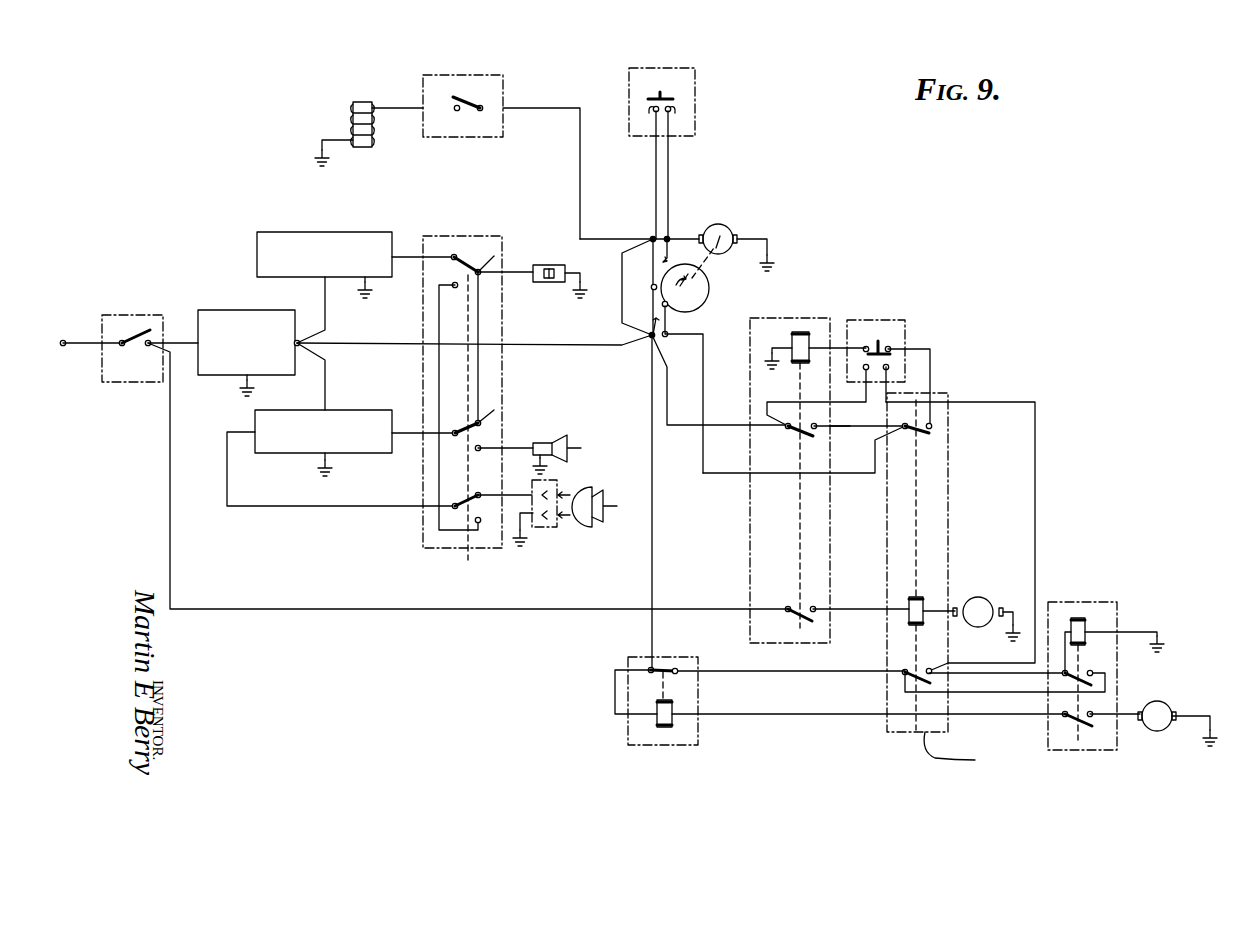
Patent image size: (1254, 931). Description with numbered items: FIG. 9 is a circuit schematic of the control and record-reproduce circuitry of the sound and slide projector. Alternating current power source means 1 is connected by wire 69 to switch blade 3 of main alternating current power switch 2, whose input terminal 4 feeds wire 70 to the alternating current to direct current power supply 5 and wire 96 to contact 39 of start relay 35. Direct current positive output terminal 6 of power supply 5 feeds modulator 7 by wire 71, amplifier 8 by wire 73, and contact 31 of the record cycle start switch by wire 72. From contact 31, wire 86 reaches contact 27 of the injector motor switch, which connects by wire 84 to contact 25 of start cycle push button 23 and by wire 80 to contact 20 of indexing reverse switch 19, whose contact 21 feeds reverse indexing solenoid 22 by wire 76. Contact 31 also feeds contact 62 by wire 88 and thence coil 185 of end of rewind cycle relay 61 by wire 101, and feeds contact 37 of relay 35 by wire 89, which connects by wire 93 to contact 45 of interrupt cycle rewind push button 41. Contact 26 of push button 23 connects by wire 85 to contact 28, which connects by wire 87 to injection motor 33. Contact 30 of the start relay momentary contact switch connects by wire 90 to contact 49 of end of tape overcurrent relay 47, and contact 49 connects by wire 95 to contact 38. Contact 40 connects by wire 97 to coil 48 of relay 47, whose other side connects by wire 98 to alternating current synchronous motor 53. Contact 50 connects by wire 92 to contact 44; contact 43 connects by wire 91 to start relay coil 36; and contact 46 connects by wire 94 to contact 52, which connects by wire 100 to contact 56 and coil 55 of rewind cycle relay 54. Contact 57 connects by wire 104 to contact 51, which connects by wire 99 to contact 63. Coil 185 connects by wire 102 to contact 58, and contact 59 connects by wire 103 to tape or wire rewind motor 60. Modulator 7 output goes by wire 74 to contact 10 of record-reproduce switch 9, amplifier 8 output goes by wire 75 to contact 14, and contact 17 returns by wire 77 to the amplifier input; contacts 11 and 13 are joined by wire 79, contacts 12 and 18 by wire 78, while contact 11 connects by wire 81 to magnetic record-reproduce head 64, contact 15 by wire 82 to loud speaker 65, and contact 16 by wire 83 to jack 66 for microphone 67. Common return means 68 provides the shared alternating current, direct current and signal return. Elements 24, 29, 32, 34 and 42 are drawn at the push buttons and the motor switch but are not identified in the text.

The alternating current power source means 1 is at (56, 352).
The main alternating current power switch 2 is at (128, 310).
The main alternating current power switch blade 3 is at (122, 348).
The alternating current power input means terminal 4 is at (147, 344).
The alternating current to direct current power supply 5 is at (224, 310).
The direct current positive power output terminal 6 is at (298, 334).
The modulator 7 is at (310, 232).
The amplifier 8 is at (286, 458).
The record-reproduce switch 9 is at (462, 230).
The contact 10 is at (451, 256).
The contact 11 is at (474, 256).
The contact 12 is at (454, 288).
The contact 13 is at (476, 414).
The contact 14 is at (460, 426).
The contact 15 is at (478, 450).
The contact 16 is at (479, 494).
The contact 17 is at (460, 500).
The contact 18 is at (483, 521).
The indexing reverse switch 19 is at (506, 88).
The contact 20 is at (479, 110).
The contact 21 is at (455, 112).
The reverse indexing solenoid 22 is at (362, 90).
The start cycle push button 23 is at (698, 88).
The push button 24 is at (658, 94).
The contact 25 is at (646, 120).
The contact 26 is at (678, 120).
The contact 27 is at (652, 236).
The contact 28 is at (668, 238).
The cam follower pivot 29 is at (650, 284).
The contact 30 is at (664, 342).
The contact 31 is at (648, 350).
The cam switch contact 32 is at (672, 308).
The injection motor 33 is at (734, 229).
The cam 34 is at (706, 281).
The start relay 35 is at (817, 312).
The start relay coil 36 is at (791, 333).
The contact 37 is at (786, 433).
The contact 38 is at (818, 422).
The contact 39 is at (789, 606).
The contact 40 is at (824, 610).
The interrupt cycle rewind push button 41 is at (864, 290).
The push button 42 is at (892, 341).
The contact 43 is at (868, 346).
The contact 44 is at (896, 349).
The contact 45 is at (864, 380).
The contact 46 is at (894, 368).
The end of tape overcurrent relay 47 is at (952, 529).
The coil 48 is at (914, 597).
The contact 49 is at (904, 434).
The contact 50 is at (940, 434).
The contact 51 is at (904, 669).
The contact 52 is at (928, 670).
The alternating current synchronous motor 53 is at (980, 627).
The rewind cycle relay 54 is at (1116, 609).
The coil 55 is at (1085, 626).
The contact 56 is at (1058, 685).
The contact 57 is at (1090, 672).
The contact 58 is at (1065, 717).
The contact 59 is at (1088, 712).
The tape or wire rewind motor 60 is at (1176, 701).
The end of rewind cycle relay 61 is at (660, 658).
The contact 62 is at (648, 672).
The contact 63 is at (683, 660).
The magnetic record-reproduce head 64 is at (564, 265).
The loud speaker 65 is at (579, 449).
The microphone jack 66 is at (556, 480).
The microphone 67 is at (608, 497).
The common return means 68 is at (315, 146).
The wire 69 is at (88, 334).
The wire 70 is at (164, 340).
The wire 71 is at (325, 326).
The wire 72 is at (353, 345).
The wire 73 is at (328, 382).
The wire 74 is at (410, 234).
The wire 75 is at (418, 452).
The wire 76 is at (403, 102).
The wire 77 is at (296, 506).
The wire 78 is at (439, 388).
The wire 79 is at (480, 373).
The wire 80 is at (553, 108).
The wire 81 is at (506, 264).
The wire 82 is at (504, 446).
The wire 83 is at (502, 493).
The wire 84 is at (650, 164).
The wire 85 is at (672, 156).
The wire 86 is at (622, 288).
The wire 87 is at (670, 245).
The wire 88 is at (652, 549).
The wire 89 is at (667, 395).
The wire 90 is at (706, 381).
The wire 91 is at (812, 495).
The wire 92 is at (934, 365).
The wire 93 is at (786, 398).
The wire 94 is at (1012, 404).
The wire 95 is at (840, 424).
The wire 96 is at (175, 534).
The wire 97 is at (873, 611).
The wire 98 is at (932, 633).
The wire 99 is at (748, 672).
The wire 100 is at (976, 674).
The wire 101 is at (614, 692).
The wire 102 is at (762, 713).
The wire 103 is at (1124, 716).
The wire 104 is at (976, 695).
The coil 185 is at (657, 719).